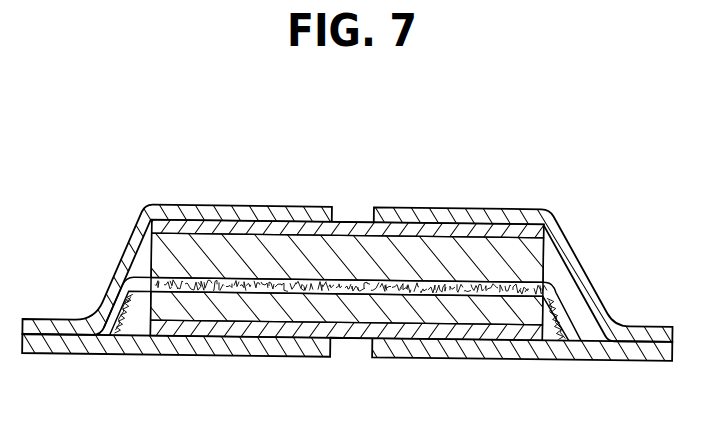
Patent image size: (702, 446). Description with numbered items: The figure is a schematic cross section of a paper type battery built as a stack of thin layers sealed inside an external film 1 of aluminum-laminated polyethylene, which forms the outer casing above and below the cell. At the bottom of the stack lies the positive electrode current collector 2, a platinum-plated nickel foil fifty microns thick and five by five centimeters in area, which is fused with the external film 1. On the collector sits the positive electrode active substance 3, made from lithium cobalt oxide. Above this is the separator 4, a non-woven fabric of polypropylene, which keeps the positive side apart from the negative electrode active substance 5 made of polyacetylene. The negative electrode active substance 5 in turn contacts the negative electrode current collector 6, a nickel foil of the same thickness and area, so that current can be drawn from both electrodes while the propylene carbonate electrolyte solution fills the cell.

The external film 1 is at (268, 214).
The positive electrode current collector 2 is at (283, 332).
The positive electrode active substance 3 is at (348, 316).
The separator 4 is at (425, 291).
The negative electrode active substance 5 is at (316, 251).
The negative electrode current collector 6 is at (440, 231).